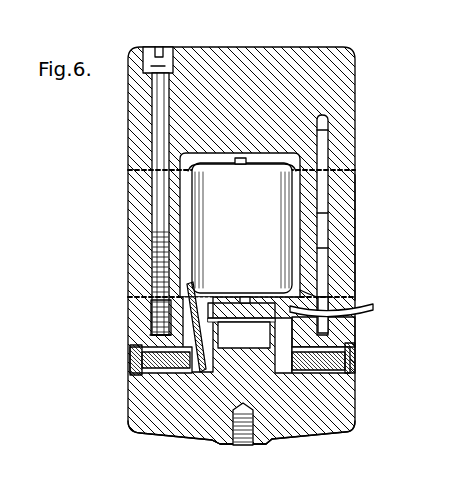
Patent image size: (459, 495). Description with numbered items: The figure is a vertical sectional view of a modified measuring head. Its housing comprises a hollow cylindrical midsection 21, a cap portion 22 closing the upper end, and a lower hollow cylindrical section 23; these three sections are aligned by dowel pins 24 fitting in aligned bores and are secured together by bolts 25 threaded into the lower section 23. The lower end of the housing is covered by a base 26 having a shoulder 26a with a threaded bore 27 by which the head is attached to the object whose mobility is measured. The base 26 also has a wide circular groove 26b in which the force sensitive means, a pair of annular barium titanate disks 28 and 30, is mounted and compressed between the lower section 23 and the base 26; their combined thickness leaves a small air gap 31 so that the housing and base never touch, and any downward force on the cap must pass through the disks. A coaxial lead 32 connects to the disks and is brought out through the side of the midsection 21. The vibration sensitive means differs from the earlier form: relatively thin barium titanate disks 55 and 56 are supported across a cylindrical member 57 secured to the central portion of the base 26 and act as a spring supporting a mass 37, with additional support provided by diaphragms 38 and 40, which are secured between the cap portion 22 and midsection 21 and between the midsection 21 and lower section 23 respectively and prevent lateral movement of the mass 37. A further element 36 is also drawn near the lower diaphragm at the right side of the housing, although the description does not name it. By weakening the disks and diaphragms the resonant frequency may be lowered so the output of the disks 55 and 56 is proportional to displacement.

The hollow cylindrical midsection 21 is at (357, 212).
The cap portion 22 is at (360, 90).
The lower hollow cylindrical section 23 is at (352, 331).
The dowel pins 24 is at (323, 183).
The bolts 25 is at (152, 120).
The base 26 is at (353, 412).
The shoulder 26a is at (230, 444).
The wide circular groove 26b is at (283, 372).
The threaded bore 27 is at (248, 445).
The annular disk 28 is at (352, 366).
The annular disk 30 is at (140, 372).
The air gap 31 is at (130, 346).
The coaxial electrical lead 32 is at (140, 322).
The spring plate 36 is at (374, 308).
The mass 37 is at (205, 197).
The diaphragm 38 is at (288, 164).
The diaphragm 40 is at (300, 288).
The thin barium titanate disk 55 is at (223, 296).
The thin barium titanate disk 56 is at (245, 297).
The cylindrical member 57 is at (219, 335).